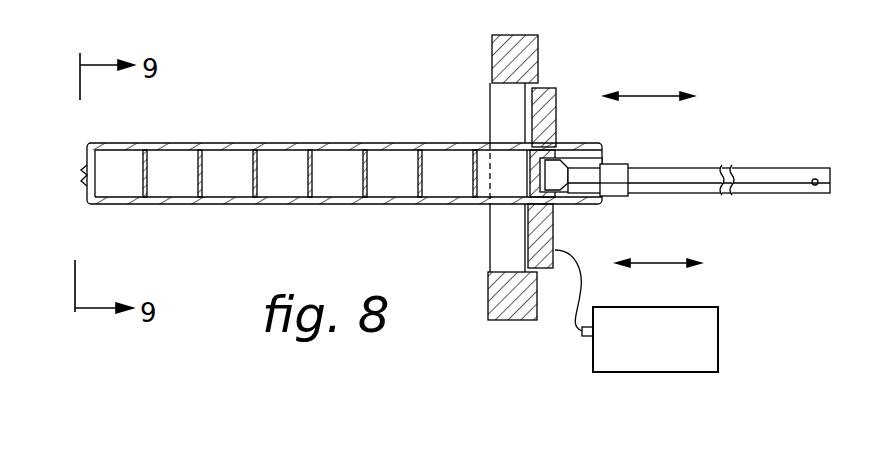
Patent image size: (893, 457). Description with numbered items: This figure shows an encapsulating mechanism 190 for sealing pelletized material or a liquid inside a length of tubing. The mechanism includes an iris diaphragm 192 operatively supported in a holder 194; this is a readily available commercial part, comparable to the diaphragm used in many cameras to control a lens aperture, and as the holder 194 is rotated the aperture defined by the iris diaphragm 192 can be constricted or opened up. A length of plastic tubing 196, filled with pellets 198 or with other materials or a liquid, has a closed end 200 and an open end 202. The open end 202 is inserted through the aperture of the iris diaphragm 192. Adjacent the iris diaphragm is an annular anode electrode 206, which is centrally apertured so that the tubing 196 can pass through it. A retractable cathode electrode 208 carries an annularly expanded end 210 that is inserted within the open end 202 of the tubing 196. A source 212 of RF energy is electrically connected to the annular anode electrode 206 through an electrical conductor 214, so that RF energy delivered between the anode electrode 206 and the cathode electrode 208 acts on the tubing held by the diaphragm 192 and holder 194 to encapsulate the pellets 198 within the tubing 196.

The encapsulating mechanism 190 is at (418, 265).
The iris diaphragm 192 is at (522, 238).
The holder 194 is at (492, 320).
The plastic tubing 196 is at (222, 205).
The pellets 198 is at (172, 180).
The closed end 200 is at (85, 178).
The open end 202 is at (593, 148).
The annular anode electrode 206 is at (580, 136).
The retractable cathode electrode 208 is at (800, 195).
The annularly expanded end 210 is at (557, 145).
The source of RF energy 212 is at (655, 372).
The electrical conductor 214 is at (574, 329).